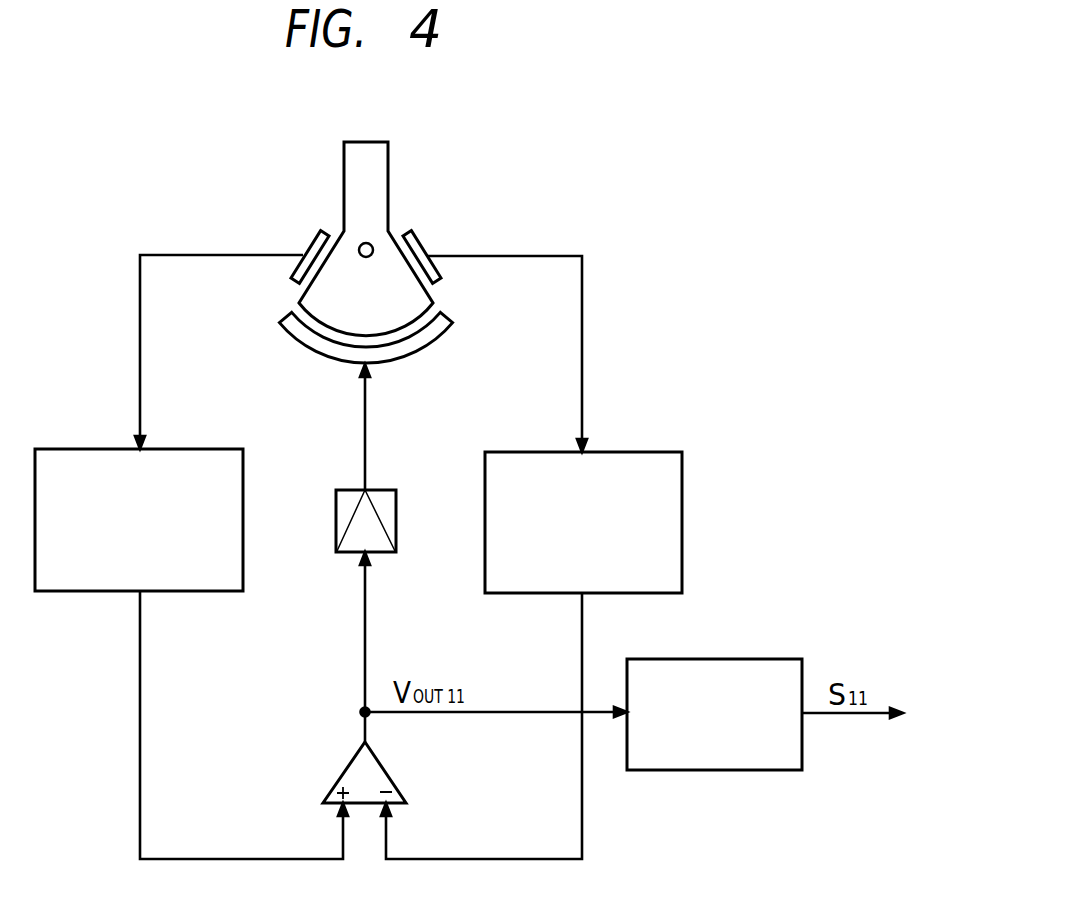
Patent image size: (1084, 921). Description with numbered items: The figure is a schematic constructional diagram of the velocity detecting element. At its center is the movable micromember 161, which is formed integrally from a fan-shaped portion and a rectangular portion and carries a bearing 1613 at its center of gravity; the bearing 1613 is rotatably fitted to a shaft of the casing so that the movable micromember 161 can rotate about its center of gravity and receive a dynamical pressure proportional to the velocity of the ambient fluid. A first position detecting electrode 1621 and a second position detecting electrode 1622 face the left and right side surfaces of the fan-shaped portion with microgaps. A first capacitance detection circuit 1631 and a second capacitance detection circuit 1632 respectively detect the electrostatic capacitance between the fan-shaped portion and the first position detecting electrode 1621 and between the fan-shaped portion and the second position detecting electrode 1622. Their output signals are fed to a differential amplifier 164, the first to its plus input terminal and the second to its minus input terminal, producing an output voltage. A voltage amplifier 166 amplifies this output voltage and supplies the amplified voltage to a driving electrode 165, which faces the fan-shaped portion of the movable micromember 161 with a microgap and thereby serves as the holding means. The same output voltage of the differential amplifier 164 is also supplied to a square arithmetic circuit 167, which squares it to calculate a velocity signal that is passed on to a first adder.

The movable micromember 161 is at (382, 163).
The bearing 1613 is at (372, 244).
The first position detecting electrode 1621 is at (326, 237).
The second position detecting electrode 1622 is at (443, 273).
The driving electrode 165 is at (430, 340).
The first capacitance detection circuit 1631 is at (78, 449).
The second capacitance detection circuit 1632 is at (647, 452).
The voltage amplifier 166 is at (396, 500).
The differential amplifier 164 is at (392, 782).
The square arithmetic circuit 167 is at (783, 770).